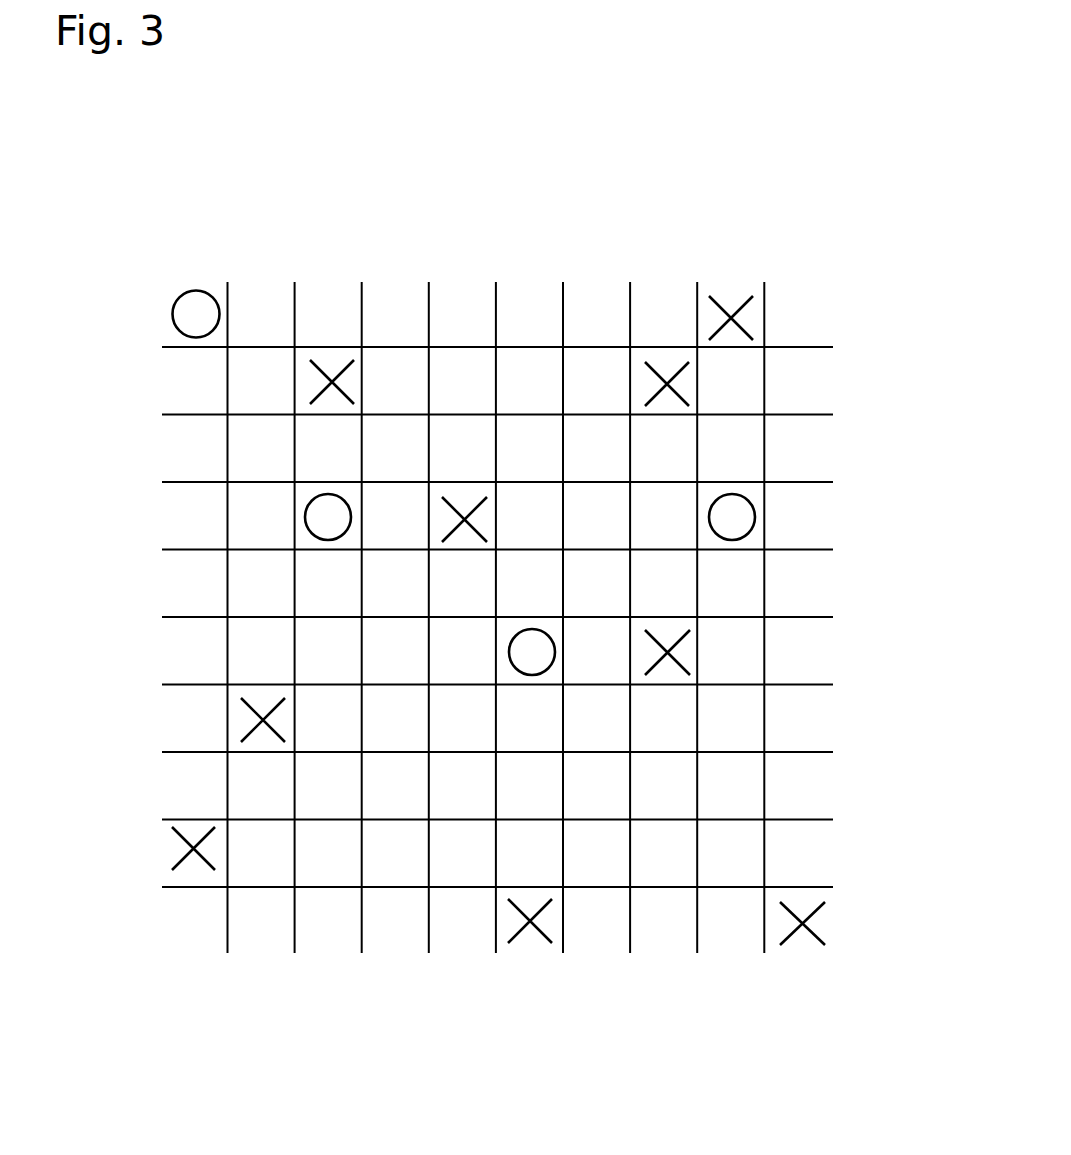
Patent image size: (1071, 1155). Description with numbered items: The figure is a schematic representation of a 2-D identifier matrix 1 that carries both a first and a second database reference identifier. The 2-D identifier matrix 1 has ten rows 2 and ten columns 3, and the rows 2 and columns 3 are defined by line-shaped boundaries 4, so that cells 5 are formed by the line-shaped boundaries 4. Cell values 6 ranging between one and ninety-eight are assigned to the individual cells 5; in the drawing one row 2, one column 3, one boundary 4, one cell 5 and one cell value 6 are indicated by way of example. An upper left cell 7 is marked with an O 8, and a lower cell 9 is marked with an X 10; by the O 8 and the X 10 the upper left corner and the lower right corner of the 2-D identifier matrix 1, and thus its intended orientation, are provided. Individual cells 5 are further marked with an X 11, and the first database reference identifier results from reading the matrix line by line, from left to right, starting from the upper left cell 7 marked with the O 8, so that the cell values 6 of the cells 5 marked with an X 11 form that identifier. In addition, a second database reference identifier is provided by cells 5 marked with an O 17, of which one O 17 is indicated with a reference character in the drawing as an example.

The 2-D identifier matrix 1 is at (491, 576).
The row 2 is at (142, 459).
The column 3 is at (392, 300).
The line-shaped boundary 4 is at (193, 683).
The cell 5 is at (266, 575).
The cell value 6 is at (272, 947).
The upper left cell 7 is at (220, 295).
The O 8 is at (187, 320).
The lower cell 9 is at (780, 918).
The X 10 is at (817, 938).
The X 11 is at (653, 370).
The O 17 is at (755, 510).